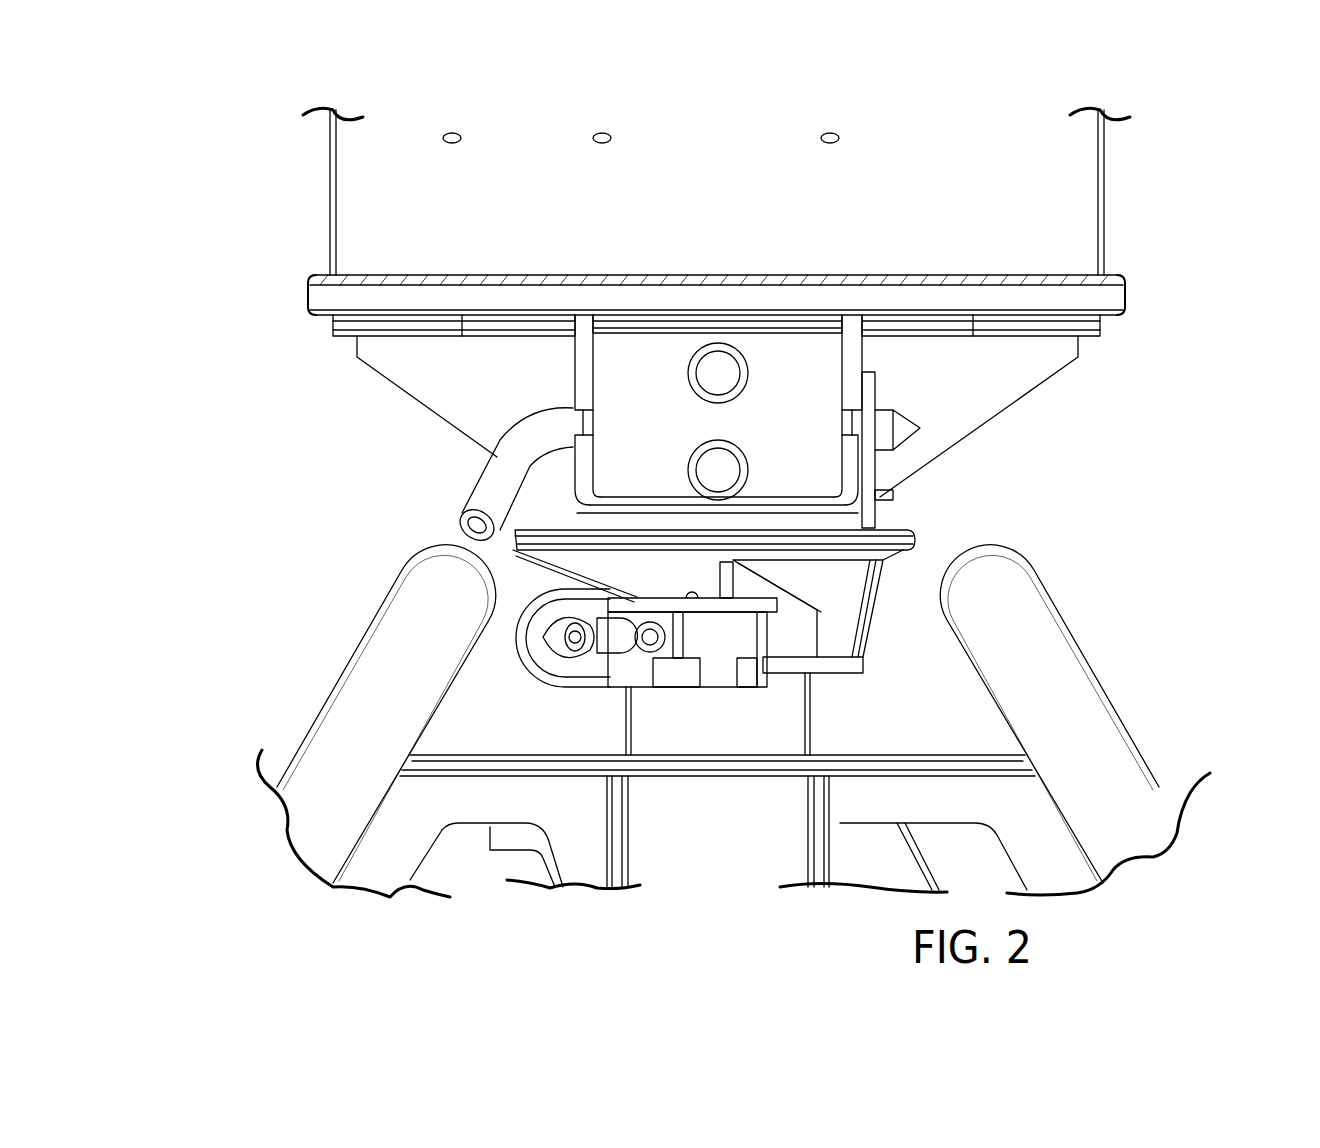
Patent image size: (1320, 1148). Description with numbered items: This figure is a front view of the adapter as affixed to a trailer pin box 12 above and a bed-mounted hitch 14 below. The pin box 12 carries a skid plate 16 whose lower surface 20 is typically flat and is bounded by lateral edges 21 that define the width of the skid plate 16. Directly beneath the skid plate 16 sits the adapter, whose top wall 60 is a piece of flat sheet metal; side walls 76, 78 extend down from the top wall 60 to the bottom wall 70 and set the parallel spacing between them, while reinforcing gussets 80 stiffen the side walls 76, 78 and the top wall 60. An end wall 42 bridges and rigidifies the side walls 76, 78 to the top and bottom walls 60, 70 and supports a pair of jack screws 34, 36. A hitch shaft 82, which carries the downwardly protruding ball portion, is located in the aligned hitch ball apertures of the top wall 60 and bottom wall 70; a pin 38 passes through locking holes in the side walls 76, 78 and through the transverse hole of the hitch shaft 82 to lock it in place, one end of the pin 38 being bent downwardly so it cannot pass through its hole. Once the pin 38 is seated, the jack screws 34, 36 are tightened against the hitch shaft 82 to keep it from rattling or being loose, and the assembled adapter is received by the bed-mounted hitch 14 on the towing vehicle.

The pin box 12 is at (292, 143).
The bed-mounted hitch 14 is at (292, 690).
The skid plate 16 is at (1128, 290).
The lower surface 20 is at (1128, 320).
The lateral edges 21 is at (308, 298).
The jack screw 34 is at (718, 373).
The jack screw 36 is at (718, 470).
The pin 38 is at (497, 497).
The end wall 42 is at (727, 290).
The top wall 60 is at (715, 237).
The bottom wall 70 is at (898, 621).
The side wall 76 is at (575, 372).
The side wall 78 is at (855, 330).
The reinforcing gussets 80 is at (447, 390).
The hitch shaft 82 is at (790, 530).